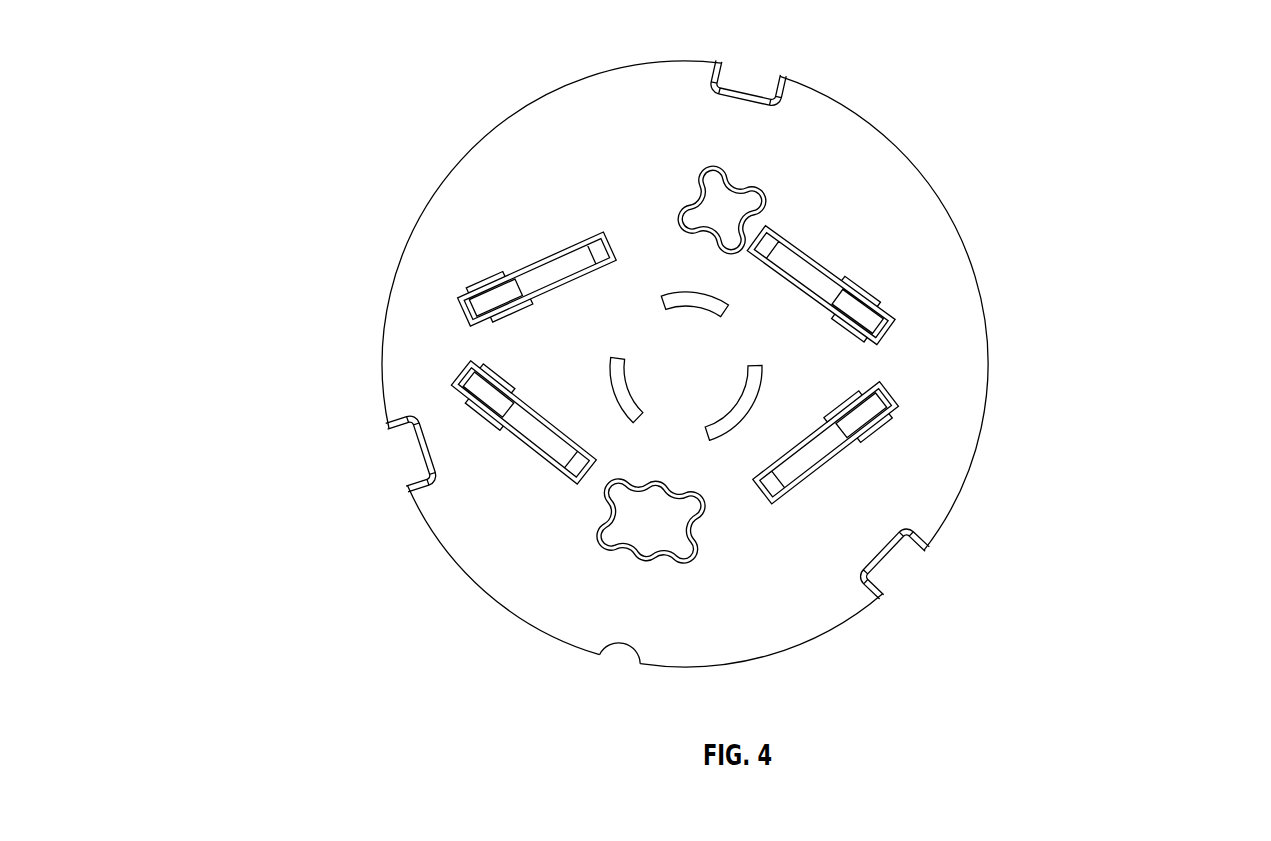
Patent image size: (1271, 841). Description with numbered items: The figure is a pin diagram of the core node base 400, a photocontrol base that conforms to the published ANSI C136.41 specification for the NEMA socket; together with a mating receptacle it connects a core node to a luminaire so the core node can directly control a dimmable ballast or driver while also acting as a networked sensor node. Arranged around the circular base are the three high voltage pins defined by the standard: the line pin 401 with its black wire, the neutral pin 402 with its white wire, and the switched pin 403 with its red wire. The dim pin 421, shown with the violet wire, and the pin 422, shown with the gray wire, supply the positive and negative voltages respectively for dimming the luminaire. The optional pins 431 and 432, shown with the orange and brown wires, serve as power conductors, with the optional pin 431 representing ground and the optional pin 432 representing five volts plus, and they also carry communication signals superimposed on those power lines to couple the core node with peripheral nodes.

The core node base 400 is at (408, 50).
The line pin 401 is at (678, 291).
The neutral pin 402 is at (762, 390).
The switched pin 403 is at (558, 377).
The dim pin 421 is at (883, 307).
The dim pin 422 is at (887, 420).
The optional pin 431 is at (470, 290).
The optional pin 432 is at (470, 403).